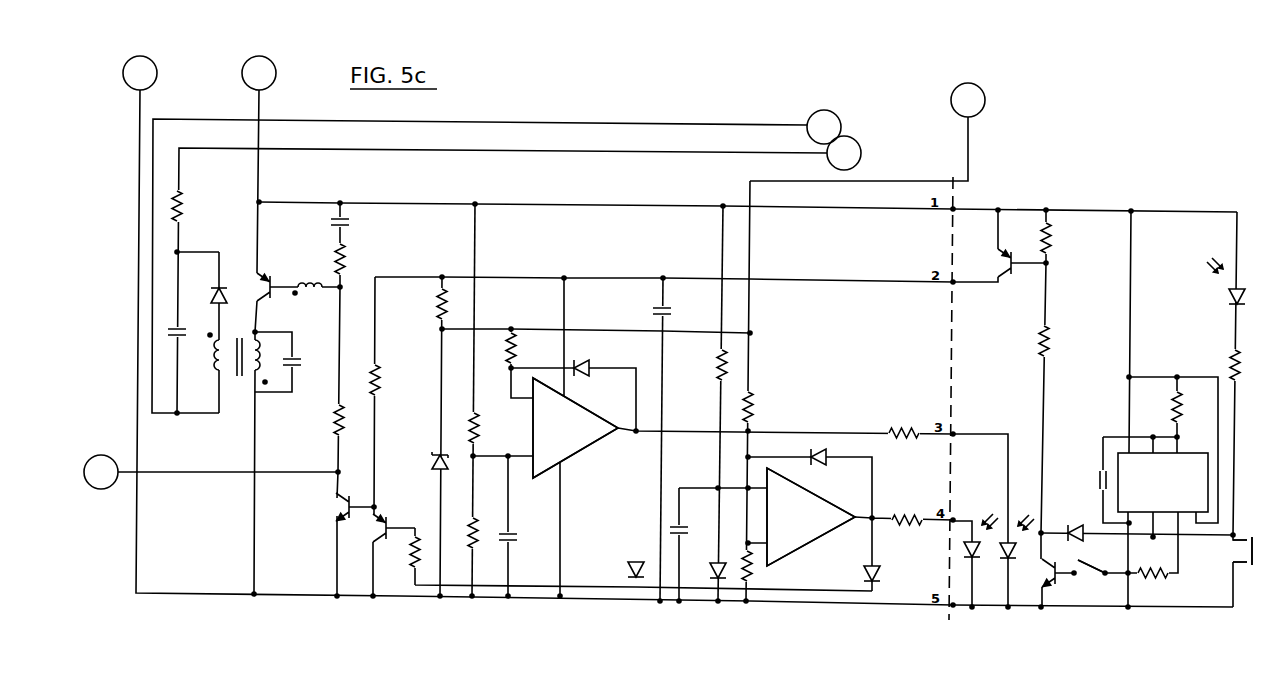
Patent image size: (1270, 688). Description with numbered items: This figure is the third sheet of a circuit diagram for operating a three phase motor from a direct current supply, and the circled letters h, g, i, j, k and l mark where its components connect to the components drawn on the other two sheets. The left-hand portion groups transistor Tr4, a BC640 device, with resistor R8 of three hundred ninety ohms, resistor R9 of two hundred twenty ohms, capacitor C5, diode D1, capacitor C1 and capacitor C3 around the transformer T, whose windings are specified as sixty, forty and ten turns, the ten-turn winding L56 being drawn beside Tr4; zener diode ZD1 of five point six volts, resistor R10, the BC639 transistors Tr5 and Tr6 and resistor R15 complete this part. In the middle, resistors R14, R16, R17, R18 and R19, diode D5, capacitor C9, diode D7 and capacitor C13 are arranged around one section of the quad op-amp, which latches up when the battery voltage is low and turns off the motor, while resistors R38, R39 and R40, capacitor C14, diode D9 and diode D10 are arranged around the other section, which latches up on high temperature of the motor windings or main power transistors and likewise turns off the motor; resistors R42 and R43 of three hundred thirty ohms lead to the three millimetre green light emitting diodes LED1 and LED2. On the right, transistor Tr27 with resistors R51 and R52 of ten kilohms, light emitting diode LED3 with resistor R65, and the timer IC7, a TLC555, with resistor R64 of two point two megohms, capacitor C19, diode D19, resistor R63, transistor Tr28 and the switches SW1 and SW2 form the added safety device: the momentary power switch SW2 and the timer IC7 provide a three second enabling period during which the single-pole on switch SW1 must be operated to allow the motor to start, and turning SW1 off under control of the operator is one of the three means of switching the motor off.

The circled connection letter h is at (140, 73).
The circled connection letter g is at (259, 73).
The circled connection letter i is at (101, 472).
The circled connection letter j is at (824, 127).
The circled connection letter k is at (844, 153).
The circled connection letter l is at (968, 100).
The resistor R8 is at (191, 206).
The capacitor C5 is at (324, 228).
The resistor R9 is at (322, 259).
The transistor Tr4 is at (242, 265).
The diode D1 is at (203, 283).
The capacitor C1 is at (187, 320).
The U15 core T is at (237, 373).
The winding 5–6 L56 is at (311, 282).
The capacitor C3 is at (290, 362).
The resistor R10 is at (316, 420).
The transistor Tr5 is at (317, 506).
The transistor Tr6 is at (395, 518).
The resistor R15 is at (401, 552).
The zener diode ZD1 is at (413, 464).
The resistor R14 is at (397, 380).
The resistor R16 is at (422, 304).
The resistor R17 is at (492, 428).
The resistor R18 is at (461, 532).
The resistor R19 is at (530, 348).
The diode D5 is at (598, 358).
The capacitor C9 is at (518, 526).
The diode D7 is at (612, 569).
The capacitor C13 is at (640, 312).
The resistor R38 is at (698, 366).
The resistor R39 is at (768, 407).
The capacitor C14 is at (691, 521).
The resistor R40 is at (764, 568).
The diode D9 is at (832, 476).
The diode D10 is at (848, 575).
The resistor R42 is at (904, 422).
The resistor R43 is at (906, 510).
The light emitting diode LED1 is at (981, 529).
The light emitting diode LED2 is at (1026, 548).
The transistor Tr27 is at (1005, 282).
The resistor R51 is at (1067, 238).
The resistor R52 is at (1065, 343).
The light emitting diode LED3 is at (1199, 281).
The resistor R65 is at (1212, 365).
The resistor R64 is at (1158, 407).
The capacitor C19 is at (1079, 479).
The diode D19 is at (1069, 518).
The timer IC7 is at (1163, 482).
The "on" switch SW1 is at (1097, 561).
The "Power" switch SW2 is at (1222, 551).
The resistor R63 is at (1154, 586).
The transistor Tr28 is at (1074, 581).